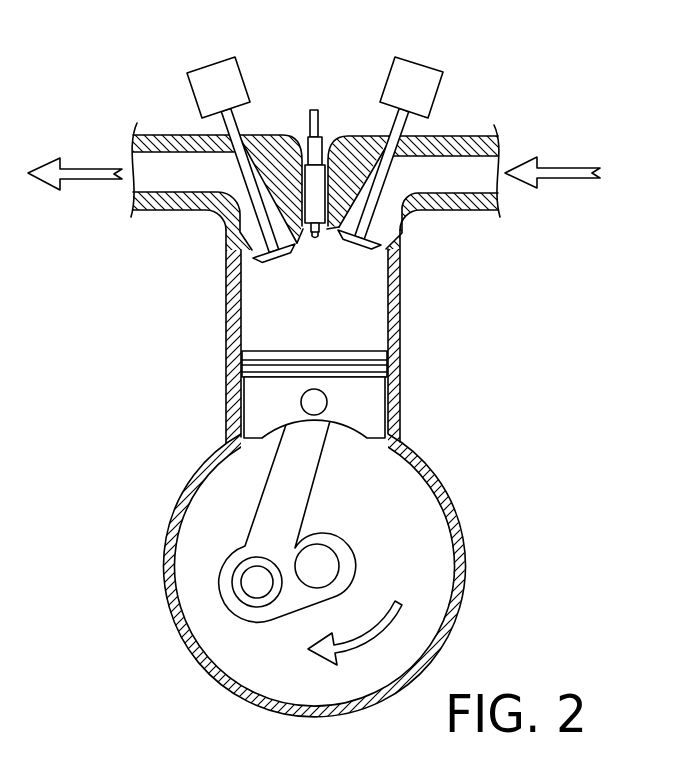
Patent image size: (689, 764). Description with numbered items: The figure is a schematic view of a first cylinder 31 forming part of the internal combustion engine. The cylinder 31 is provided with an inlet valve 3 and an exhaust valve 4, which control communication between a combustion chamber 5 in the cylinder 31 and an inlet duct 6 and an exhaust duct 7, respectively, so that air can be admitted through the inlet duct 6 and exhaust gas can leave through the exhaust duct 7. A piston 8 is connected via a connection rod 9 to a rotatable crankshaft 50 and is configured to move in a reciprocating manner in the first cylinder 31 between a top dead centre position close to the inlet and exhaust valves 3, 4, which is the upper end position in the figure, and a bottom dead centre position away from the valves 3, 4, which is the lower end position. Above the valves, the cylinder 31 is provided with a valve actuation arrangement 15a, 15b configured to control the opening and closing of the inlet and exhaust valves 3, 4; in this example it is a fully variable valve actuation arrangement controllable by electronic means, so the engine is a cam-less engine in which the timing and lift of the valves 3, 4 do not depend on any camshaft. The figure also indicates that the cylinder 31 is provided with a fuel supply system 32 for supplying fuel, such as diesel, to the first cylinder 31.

The inlet valve 3 is at (358, 237).
The exhaust valve 4 is at (276, 252).
The combustion chamber 5 is at (320, 300).
The inlet duct 6 is at (450, 173).
The exhaust duct 7 is at (180, 173).
The piston 8 is at (350, 400).
The connection rod 9 is at (287, 500).
The valve actuation arrangement 15a is at (413, 90).
The valve actuation arrangement 15b is at (219, 90).
The first cylinder 31 is at (567, 62).
The fuel supply system 32 is at (322, 150).
The crankshaft 50 is at (316, 567).